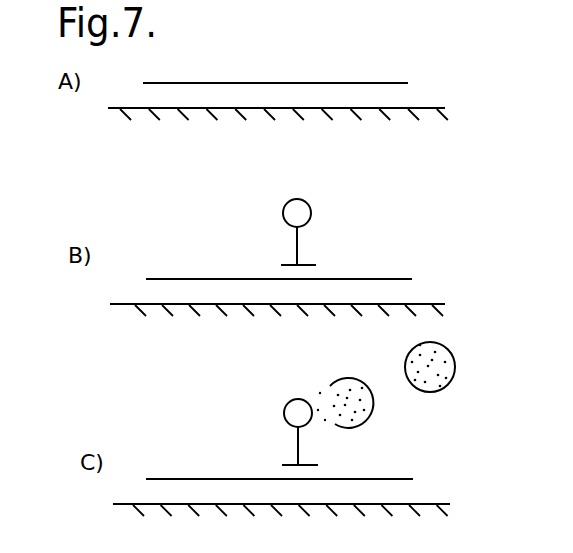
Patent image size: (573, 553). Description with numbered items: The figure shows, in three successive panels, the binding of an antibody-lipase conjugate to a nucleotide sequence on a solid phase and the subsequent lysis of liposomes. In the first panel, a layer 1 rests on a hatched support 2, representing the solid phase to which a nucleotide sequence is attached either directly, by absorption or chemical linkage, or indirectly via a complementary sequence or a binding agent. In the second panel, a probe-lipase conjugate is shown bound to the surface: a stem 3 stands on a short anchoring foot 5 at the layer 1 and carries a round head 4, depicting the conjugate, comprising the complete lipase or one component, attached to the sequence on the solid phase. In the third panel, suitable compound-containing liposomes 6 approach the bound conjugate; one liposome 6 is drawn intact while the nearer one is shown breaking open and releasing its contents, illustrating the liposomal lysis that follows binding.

The substrate 1 is at (397, 82).
The support base 2 is at (445, 110).
The linker molecule 3 is at (300, 249).
The functional head group 4 is at (307, 203).
The anchoring group 5 is at (289, 263).
The particle 6 is at (373, 410).